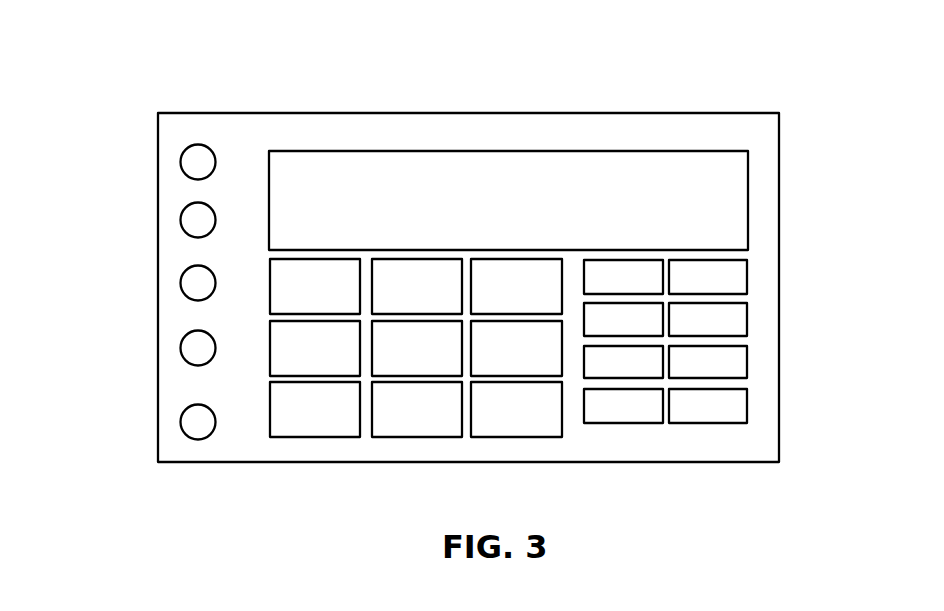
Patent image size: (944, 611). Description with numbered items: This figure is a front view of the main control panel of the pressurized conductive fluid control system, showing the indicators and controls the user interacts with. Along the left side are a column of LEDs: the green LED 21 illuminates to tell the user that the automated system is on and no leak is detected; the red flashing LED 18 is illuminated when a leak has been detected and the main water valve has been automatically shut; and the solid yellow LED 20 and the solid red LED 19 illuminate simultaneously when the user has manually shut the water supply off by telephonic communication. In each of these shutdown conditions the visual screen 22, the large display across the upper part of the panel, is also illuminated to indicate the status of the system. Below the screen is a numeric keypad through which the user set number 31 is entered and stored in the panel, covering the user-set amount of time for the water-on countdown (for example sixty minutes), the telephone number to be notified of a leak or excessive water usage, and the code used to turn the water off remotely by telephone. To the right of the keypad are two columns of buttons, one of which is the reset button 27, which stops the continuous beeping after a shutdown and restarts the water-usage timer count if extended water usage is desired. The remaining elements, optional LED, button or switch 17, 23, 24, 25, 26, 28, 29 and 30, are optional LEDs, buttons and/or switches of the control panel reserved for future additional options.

The optional LED, button or switch 17 is at (197, 423).
The red flashing LED 18 is at (197, 350).
The solid red LED 19 is at (197, 285).
The solid yellow LED 20 is at (197, 221).
The green LED 21 is at (197, 163).
The visual screen 22 is at (356, 180).
The optional LED, button or switch 23 is at (620, 273).
The optional LED, button or switch 24 is at (713, 278).
The optional LED, button or switch 25 is at (718, 320).
The optional LED, button or switch 26 is at (720, 358).
The reset button 27 is at (717, 415).
The optional LED, button or switch 28 is at (648, 410).
The optional LED, button or switch 29 is at (632, 363).
The optional LED, button or switch 30 is at (632, 322).
The user set number 31 is at (407, 438).